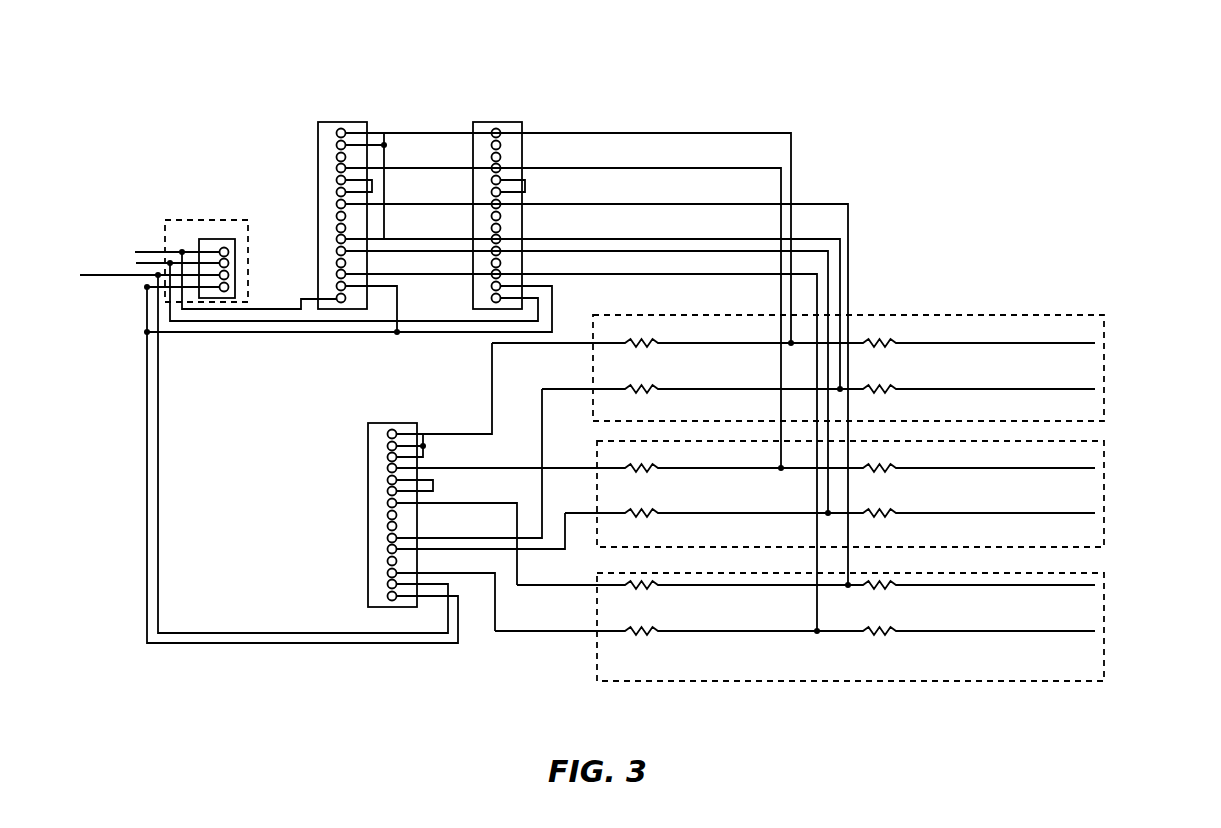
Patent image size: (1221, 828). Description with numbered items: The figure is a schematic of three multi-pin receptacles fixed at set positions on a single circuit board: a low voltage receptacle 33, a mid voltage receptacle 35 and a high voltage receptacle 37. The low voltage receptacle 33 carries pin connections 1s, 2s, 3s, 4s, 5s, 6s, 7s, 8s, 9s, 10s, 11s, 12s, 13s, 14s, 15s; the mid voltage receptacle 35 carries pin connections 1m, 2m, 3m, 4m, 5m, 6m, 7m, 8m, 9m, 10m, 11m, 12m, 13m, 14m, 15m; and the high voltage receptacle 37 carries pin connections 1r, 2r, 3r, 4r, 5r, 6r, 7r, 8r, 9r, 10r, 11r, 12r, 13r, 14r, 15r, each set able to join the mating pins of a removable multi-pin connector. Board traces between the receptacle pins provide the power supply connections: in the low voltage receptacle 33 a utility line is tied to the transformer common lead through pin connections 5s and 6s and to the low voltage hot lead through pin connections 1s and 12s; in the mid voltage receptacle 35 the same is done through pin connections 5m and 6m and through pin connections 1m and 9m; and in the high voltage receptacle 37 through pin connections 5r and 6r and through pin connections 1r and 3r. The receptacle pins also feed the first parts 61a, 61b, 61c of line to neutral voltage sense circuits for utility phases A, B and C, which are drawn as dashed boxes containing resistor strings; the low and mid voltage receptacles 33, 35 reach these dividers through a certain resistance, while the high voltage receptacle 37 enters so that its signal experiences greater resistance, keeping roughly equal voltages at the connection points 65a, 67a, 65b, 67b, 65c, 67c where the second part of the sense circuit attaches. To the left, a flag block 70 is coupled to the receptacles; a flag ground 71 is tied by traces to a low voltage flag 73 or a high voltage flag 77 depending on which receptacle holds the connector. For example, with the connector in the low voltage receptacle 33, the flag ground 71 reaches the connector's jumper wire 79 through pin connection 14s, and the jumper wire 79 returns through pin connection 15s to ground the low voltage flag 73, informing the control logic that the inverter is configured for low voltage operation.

The low voltage receptacle 33 is at (342, 122).
The mid voltage receptacle 35 is at (495, 122).
The high voltage receptacle 37 is at (393, 423).
The flag block 70 is at (207, 220).
The flag ground 71 is at (147, 287).
The low voltage flag 73 is at (135, 252).
The high voltage flag 77 is at (252, 449).
The jumper wire 79 is at (136, 263).
The first part of line to neutral voltage sense circuit for phase A 61a is at (1016, 315).
The first part of line to neutral voltage sense circuit for phase B 61b is at (1104, 441).
The first part of line to neutral voltage sense circuit for phase C 61c is at (597, 681).
The connection point 65a is at (1095, 343).
The connection point 67a is at (1095, 389).
The connection point 65b is at (1095, 468).
The connection point 67b is at (1095, 513).
The connection point 65c is at (1095, 585).
The connection point 67c is at (1095, 631).
The pin connection 1s is at (338, 131).
The pin connection 2s is at (338, 143).
The pin connection 3s is at (337, 157).
The pin connection 4s is at (337, 169).
The pin connection 5s is at (346, 180).
The pin connection 6s is at (346, 192).
The pin connection 7s is at (338, 202).
The pin connection 8s is at (337, 216).
The pin connection 9s is at (337, 229).
The pin connection 10s is at (346, 240).
The pin connection 11s is at (337, 251).
The pin connection 12s is at (337, 265).
The pin connection 13s is at (346, 273).
The pin connection 14s is at (383, 288).
The pin connection 15s is at (338, 296).
The pin connection 1m is at (492, 132).
The pin connection 2m is at (492, 145).
The pin connection 3m is at (492, 157).
The pin connection 4m is at (500, 167).
The pin connection 5m is at (500, 179).
The pin connection 6m is at (500, 192).
The pin connection 7m is at (500, 204).
The pin connection 8m is at (500, 216).
The pin connection 9m is at (500, 228).
The pin connection 10m is at (493, 238).
The pin connection 11m is at (493, 250).
The pin connection 12m is at (500, 263).
The pin connection 13m is at (493, 273).
The pin connection 14m is at (492, 286).
The pin connection 15m is at (492, 299).
The pin connection 1r is at (389, 432).
The pin connection 2r is at (389, 444).
The pin connection 3r is at (389, 455).
The pin connection 4r is at (389, 467).
The pin connection 5r is at (389, 479).
The pin connection 6r is at (389, 490).
The pin connection 7r is at (389, 502).
The pin connection 8r is at (389, 513).
The pin connection 9r is at (389, 525).
The pin connection 10r is at (389, 537).
The pin connection 11r is at (389, 549).
The pin connection 12r is at (389, 561).
The pin connection 13r is at (389, 573).
The pin connection 14r is at (389, 585).
The pin connection 15r is at (389, 597).